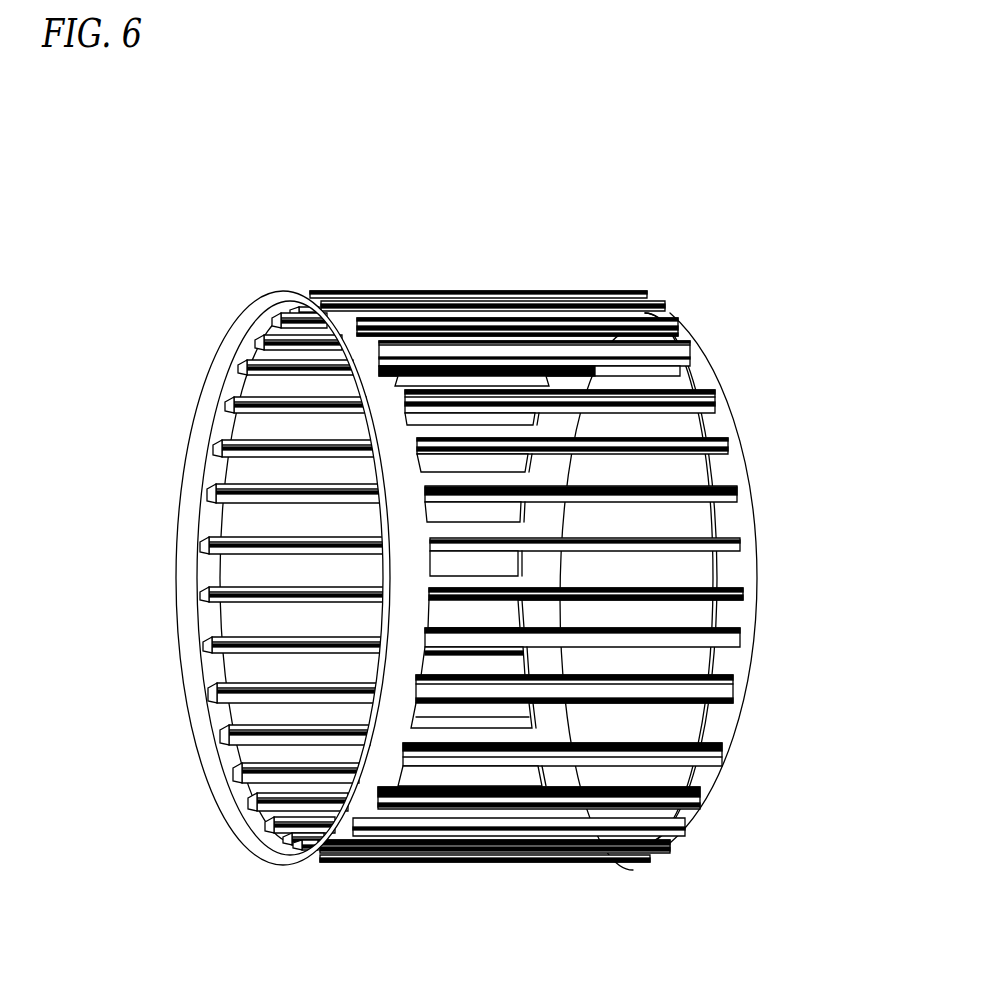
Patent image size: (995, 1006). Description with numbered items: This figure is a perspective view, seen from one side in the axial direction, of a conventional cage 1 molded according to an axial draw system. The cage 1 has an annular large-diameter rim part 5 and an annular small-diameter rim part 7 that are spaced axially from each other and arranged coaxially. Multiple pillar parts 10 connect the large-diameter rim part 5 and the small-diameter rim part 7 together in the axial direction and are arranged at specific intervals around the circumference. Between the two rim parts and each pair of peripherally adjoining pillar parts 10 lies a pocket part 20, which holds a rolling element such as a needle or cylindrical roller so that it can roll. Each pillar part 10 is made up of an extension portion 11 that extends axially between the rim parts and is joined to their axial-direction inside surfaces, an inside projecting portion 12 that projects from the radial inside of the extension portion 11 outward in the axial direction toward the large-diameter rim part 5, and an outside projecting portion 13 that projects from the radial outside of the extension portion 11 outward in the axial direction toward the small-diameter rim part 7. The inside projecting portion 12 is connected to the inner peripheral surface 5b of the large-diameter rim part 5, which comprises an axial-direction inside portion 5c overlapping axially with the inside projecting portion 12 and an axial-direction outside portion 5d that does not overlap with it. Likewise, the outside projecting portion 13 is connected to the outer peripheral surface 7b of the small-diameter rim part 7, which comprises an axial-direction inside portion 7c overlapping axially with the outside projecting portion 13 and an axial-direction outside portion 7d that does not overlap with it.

The cage 1 is at (703, 232).
The large-diameter rim part 5 is at (400, 665).
The inner peripheral surface of the large-diameter rim part 5b is at (123, 402).
The axial-direction inside portion 5c is at (227, 427).
The axial-direction outside portion 5d is at (193, 477).
The small-diameter rim part 7 is at (735, 665).
The outer peripheral surface of the small-diameter rim part 7b is at (800, 728).
The axial-direction inside portion 7c is at (700, 772).
The axial-direction outside portion 7d is at (700, 748).
The pillar part 10 is at (680, 640).
The extension portion 11 is at (300, 590).
The inside projecting portion 12 is at (213, 596).
The outside projecting portion 13 is at (735, 476).
The pocket part 20 is at (620, 605).